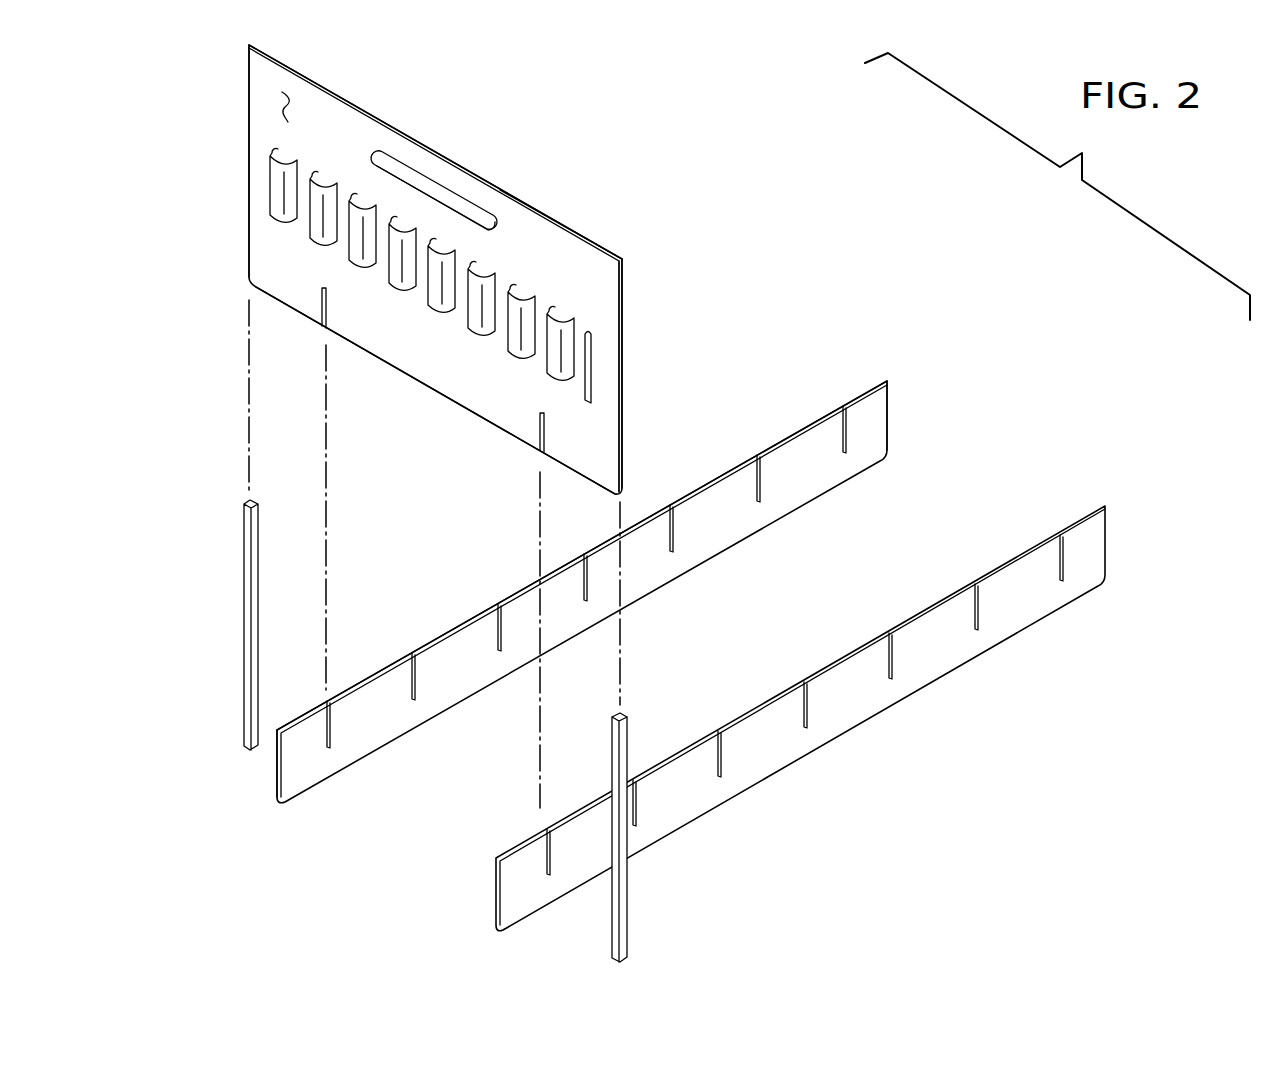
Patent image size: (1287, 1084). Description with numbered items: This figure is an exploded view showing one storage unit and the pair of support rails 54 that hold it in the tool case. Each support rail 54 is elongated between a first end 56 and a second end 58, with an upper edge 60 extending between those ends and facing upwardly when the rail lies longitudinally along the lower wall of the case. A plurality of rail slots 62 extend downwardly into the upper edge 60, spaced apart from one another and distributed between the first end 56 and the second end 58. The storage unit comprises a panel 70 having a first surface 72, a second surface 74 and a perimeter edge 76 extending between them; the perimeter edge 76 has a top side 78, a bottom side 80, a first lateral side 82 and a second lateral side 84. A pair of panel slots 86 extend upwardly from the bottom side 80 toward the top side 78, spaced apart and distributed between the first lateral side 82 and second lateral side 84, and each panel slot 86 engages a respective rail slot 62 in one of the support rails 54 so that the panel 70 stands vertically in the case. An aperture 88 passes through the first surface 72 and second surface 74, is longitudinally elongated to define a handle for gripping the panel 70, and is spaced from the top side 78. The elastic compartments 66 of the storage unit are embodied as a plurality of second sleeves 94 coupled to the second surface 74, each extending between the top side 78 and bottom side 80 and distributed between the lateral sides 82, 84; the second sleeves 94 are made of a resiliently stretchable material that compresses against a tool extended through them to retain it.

The support rail 54 is at (498, 892).
The first end 56 is at (277, 787).
The second end 58 is at (890, 415).
The upper edge 60 is at (468, 622).
The rail slot 62 is at (327, 701).
The elastic compartment 66 is at (309, 247).
The panel 70 is at (249, 45).
The first surface 72 is at (388, 123).
The second surface 74 is at (280, 108).
The perimeter edge 76 is at (623, 332).
The top side 78 is at (567, 225).
The bottom side 80 is at (488, 425).
The first lateral side 82 is at (249, 193).
The second lateral side 84 is at (623, 402).
The panel slot 86 is at (320, 340).
The aperture 88 is at (437, 196).
The second sleeve 94 is at (363, 268).